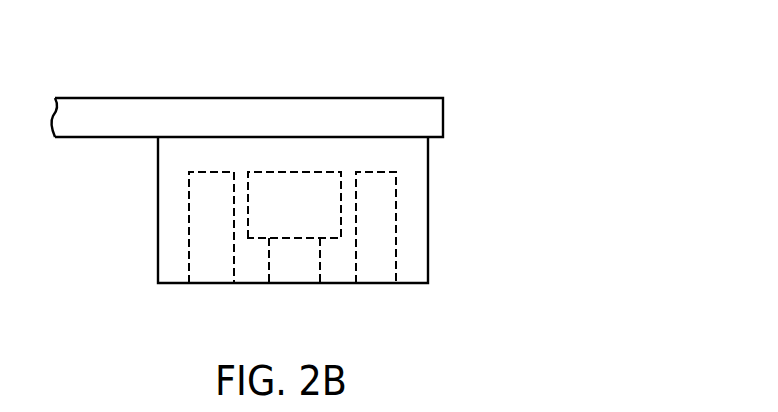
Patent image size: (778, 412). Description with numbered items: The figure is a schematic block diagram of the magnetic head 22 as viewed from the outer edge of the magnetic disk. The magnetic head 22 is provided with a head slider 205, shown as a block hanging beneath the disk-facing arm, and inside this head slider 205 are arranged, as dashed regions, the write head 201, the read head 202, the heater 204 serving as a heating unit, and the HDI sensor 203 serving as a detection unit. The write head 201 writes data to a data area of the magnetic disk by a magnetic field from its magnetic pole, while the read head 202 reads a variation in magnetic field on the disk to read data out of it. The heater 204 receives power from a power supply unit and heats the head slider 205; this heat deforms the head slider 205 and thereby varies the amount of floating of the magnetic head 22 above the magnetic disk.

The magnetic head 22 is at (439, 79).
The write head 201 is at (213, 275).
The read head 202 is at (377, 275).
The HDI sensor 203 is at (293, 275).
The heater 204 is at (330, 212).
The head slider 205 is at (162, 174).